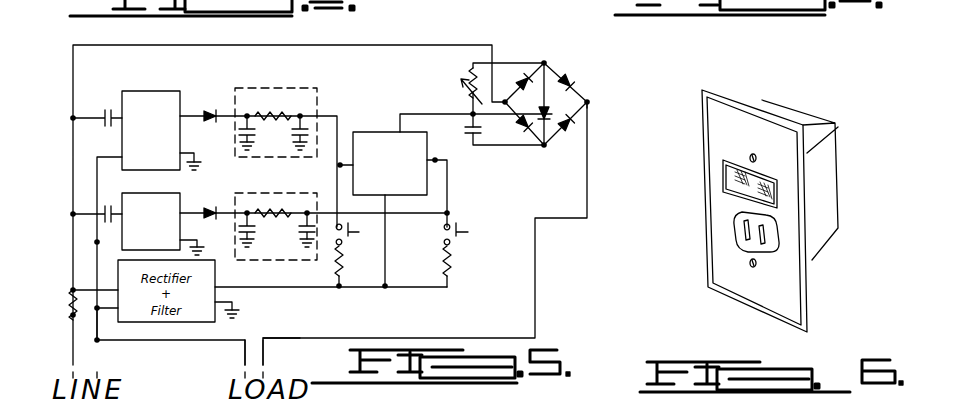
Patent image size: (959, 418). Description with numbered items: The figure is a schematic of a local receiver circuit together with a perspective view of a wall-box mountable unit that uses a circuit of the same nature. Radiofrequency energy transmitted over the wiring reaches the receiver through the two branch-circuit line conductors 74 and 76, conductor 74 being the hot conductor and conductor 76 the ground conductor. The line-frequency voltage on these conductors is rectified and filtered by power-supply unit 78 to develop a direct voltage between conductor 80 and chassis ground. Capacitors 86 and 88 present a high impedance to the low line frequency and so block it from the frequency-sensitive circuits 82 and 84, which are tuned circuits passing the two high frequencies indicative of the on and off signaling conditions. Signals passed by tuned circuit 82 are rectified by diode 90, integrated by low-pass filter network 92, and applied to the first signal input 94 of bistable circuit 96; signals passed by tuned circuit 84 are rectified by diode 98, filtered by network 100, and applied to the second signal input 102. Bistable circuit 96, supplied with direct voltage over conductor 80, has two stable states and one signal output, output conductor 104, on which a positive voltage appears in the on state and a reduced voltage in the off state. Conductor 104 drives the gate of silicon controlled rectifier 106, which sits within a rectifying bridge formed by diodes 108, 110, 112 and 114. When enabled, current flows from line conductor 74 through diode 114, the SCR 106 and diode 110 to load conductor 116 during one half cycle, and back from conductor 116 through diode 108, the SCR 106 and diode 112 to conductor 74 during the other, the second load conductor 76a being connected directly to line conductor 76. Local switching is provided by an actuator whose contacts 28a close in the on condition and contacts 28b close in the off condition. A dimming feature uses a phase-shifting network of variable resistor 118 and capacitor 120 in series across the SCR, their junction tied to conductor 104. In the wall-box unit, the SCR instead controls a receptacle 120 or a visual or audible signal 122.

In FIG. 5, the line conductor 74 is at (74, 338).
In FIG. 5, the line conductor 76 is at (100, 347).
In FIG. 5, the load conductor 76a is at (247, 350).
In FIG. 5, the power-supply unit 78 is at (242, 297).
In FIG. 5, the conductor 80 is at (310, 289).
In FIG. 5, the contacts 28a is at (359, 232).
In FIG. 5, the contacts 28b is at (466, 236).
In FIG. 5, the frequency-sensitive circuit 82 is at (122, 135).
In FIG. 5, the frequency-sensitive circuit 84 is at (122, 232).
In FIG. 5, the capacitor 86 is at (106, 108).
In FIG. 5, the capacitor 88 is at (105, 213).
In FIG. 5, the diode 90 is at (212, 109).
In FIG. 5, the low-pass filter or integrating network 92 is at (286, 82).
In FIG. 5, the signal input 94 is at (340, 160).
In FIG. 5, the bistable circuit 96 is at (387, 130).
In FIG. 5, the diode 98 is at (212, 207).
In FIG. 5, the network 100 is at (255, 196).
In FIG. 5, the second signal input 102 is at (436, 163).
In FIG. 5, the output conductor 104 is at (430, 106).
In FIG. 5, the silicon controlled rectifier 106 is at (578, 97).
In FIG. 5, the diode 108 is at (574, 78).
In FIG. 5, the diode 110 is at (578, 121).
In FIG. 5, the diode 112 is at (529, 128).
In FIG. 5, the diode 114 is at (522, 79).
In FIG. 5, the load conductor 116 is at (268, 347).
In FIG. 5, the variable resistor 118 is at (468, 66).
In FIG. 5, the capacitor 120 is at (474, 136).
In FIG. 6, the capacitor 120 is at (735, 223).
In FIG. 6, the visual or audible signal 122 is at (725, 178).